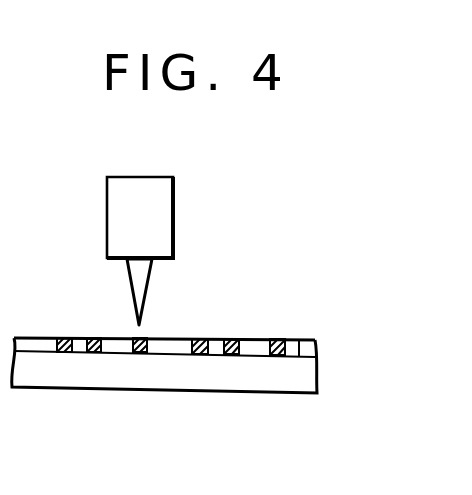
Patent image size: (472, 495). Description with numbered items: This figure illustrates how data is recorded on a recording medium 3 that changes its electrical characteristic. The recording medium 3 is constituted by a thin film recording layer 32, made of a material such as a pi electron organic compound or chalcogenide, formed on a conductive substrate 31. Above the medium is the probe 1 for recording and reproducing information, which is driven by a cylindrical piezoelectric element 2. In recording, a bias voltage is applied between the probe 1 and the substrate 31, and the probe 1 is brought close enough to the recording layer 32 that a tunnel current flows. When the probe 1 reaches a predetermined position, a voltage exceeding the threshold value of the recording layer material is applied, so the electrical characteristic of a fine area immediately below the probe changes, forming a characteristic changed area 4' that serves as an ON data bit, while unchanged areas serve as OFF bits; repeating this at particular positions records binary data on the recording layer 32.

The probe 1 is at (131, 289).
The cylindrical piezoelectric element 2 is at (174, 190).
The recording medium 3 is at (197, 338).
The conductive substrate 31 is at (318, 372).
The thin film recording layer 32 is at (298, 341).
The characteristic changed area 4' is at (171, 319).